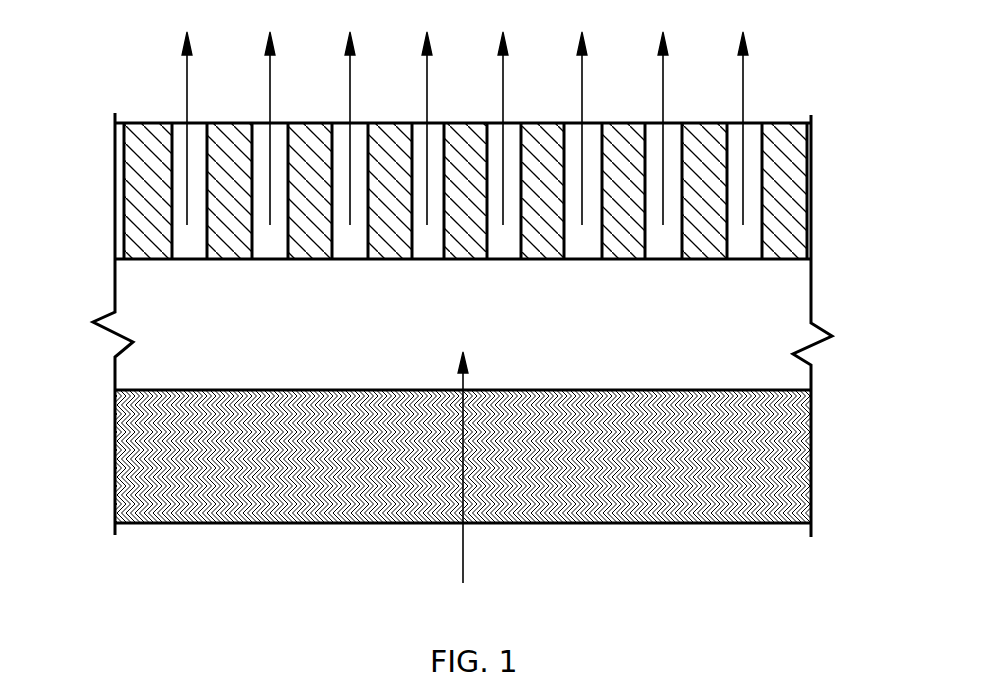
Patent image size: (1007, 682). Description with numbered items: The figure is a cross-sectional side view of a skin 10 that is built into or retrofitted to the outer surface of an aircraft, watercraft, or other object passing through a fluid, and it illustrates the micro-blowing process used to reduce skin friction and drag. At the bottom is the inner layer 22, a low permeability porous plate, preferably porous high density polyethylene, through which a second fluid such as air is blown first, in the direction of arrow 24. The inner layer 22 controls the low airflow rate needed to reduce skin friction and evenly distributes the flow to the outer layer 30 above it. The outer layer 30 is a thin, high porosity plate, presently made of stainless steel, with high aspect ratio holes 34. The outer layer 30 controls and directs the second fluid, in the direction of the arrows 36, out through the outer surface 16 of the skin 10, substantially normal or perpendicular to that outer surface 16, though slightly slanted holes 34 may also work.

The skin 10 is at (813, 145).
The outer surface 16 is at (782, 121).
The inner layer 22 is at (562, 510).
The arrow 24 is at (466, 541).
The outer layer 30 is at (143, 200).
The high aspect ratio holes 34 is at (262, 246).
The arrows 36 is at (187, 97).